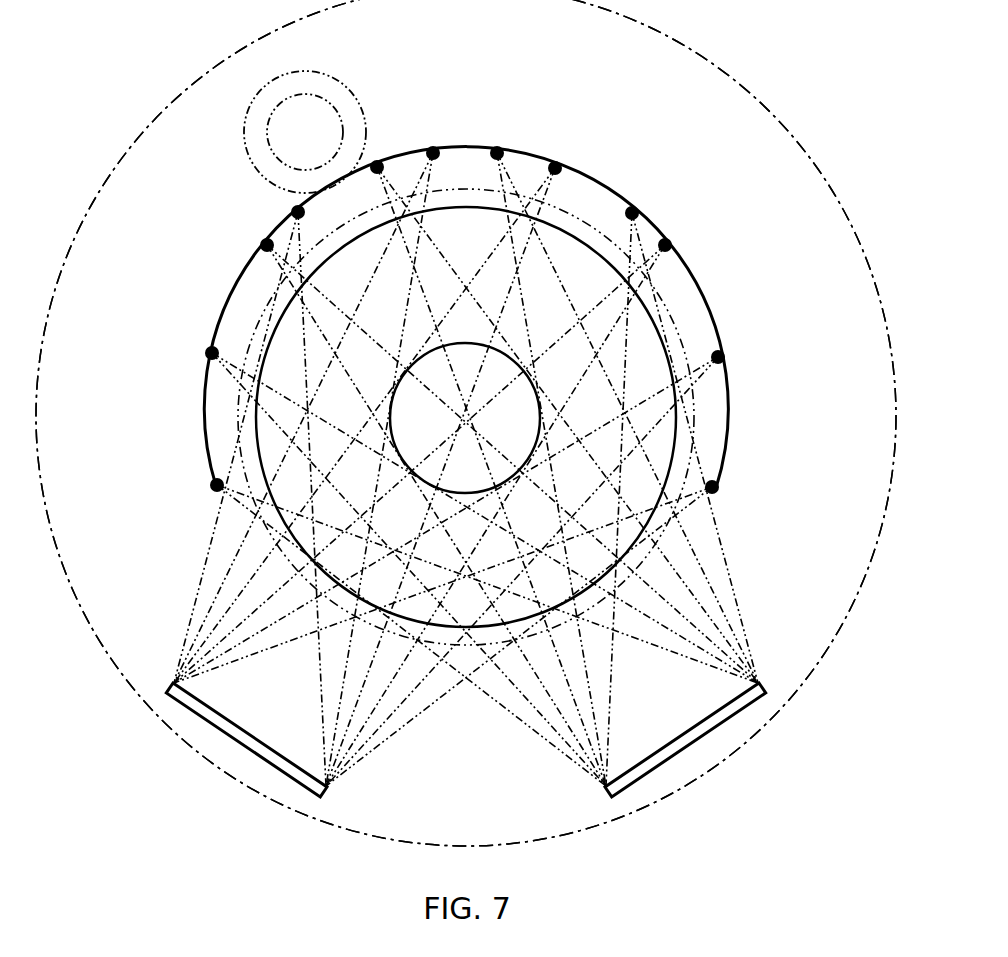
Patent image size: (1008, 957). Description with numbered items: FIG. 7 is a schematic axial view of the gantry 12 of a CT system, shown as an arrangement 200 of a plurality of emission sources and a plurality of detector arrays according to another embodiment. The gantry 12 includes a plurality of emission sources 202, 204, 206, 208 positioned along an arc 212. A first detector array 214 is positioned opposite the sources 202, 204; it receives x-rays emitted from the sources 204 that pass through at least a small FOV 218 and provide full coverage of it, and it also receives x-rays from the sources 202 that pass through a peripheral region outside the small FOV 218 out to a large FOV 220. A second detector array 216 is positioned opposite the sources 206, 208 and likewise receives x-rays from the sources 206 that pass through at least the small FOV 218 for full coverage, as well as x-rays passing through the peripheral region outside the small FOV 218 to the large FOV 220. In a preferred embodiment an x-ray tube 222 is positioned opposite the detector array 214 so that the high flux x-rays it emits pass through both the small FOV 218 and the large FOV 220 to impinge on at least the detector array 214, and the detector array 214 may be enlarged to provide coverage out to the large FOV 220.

The imaging system / gantry assembly 200 is at (783, 80).
The gantry 12 is at (741, 745).
The arc 212 is at (591, 178).
The large FOV 220 is at (678, 443).
The small FOV 218 is at (499, 345).
The x-ray tube 222 is at (250, 116).
The detector array 216 is at (248, 745).
The detector array 214 is at (690, 745).
The emission sources 202 is at (210, 353).
The emission sources 204 is at (266, 242).
The emission sources 206 is at (297, 211).
The emission sources 208 is at (557, 166).